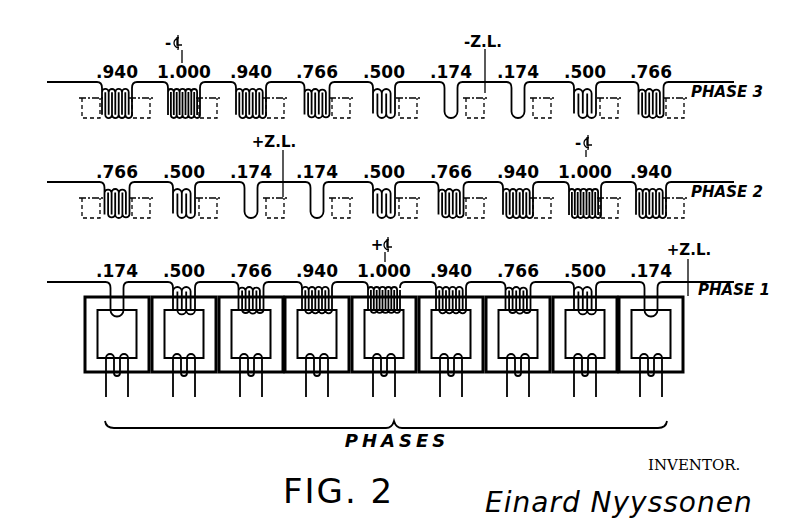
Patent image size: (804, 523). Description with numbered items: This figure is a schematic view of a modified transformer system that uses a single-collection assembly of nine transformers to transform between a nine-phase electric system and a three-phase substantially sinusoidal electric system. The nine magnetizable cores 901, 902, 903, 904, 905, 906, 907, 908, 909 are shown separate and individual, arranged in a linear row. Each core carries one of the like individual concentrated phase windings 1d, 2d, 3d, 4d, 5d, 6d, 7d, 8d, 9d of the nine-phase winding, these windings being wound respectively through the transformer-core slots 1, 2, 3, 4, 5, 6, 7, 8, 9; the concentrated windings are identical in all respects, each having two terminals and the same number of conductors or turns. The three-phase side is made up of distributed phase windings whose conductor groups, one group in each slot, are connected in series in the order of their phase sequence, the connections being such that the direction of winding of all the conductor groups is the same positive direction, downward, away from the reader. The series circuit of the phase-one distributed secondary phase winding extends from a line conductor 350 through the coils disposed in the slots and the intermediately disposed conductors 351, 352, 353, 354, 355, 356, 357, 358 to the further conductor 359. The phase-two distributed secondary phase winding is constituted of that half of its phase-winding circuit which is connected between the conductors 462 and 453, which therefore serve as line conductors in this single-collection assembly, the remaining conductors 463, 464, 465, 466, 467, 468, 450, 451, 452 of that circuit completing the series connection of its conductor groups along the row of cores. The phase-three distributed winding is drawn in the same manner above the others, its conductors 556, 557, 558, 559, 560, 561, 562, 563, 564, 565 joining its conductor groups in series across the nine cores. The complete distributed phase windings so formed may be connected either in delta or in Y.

The phase 3 winding step segment 565 is at (88, 80).
The phase 3 winding step segment 564 is at (147, 80).
The phase 3 winding step segment 563 is at (213, 80).
The phase 3 winding step segment 562 is at (280, 80).
The phase 3 winding step segment 561 is at (345, 80).
The phase 3 winding step segment 560 is at (417, 80).
The phase 3 winding step segment 559 is at (493, 80).
The phase 3 winding step segment 558 is at (562, 80).
The phase 3 winding step segment 557 is at (621, 80).
The phase 3 winding step segment 556 is at (696, 80).
The line conductor 453 is at (73, 180).
The phase 2 winding step segment 452 is at (147, 180).
The phase 2 winding step segment 451 is at (213, 180).
The phase 2 winding step segment 450 is at (273, 180).
The phase 2 winding step segment 468 is at (290, 180).
The phase 2 winding step segment 467 is at (350, 180).
The phase 2 winding step segment 466 is at (417, 180).
The phase 2 winding step segment 465 is at (480, 180).
The phase 2 winding step segment 464 is at (549, 180).
The phase 2 winding step segment 463 is at (624, 180).
The line conductor 462 is at (694, 180).
The further conductor 359 is at (60, 280).
The intermediately disposed conductor 358 is at (148, 280).
The intermediately disposed conductor 357 is at (217, 280).
The intermediately disposed conductor 356 is at (283, 280).
The intermediately disposed conductor 355 is at (352, 280).
The intermediately disposed conductor 354 is at (417, 280).
The intermediately disposed conductor 353 is at (488, 280).
The intermediately disposed conductor 352 is at (552, 280).
The intermediately disposed conductor 351 is at (621, 280).
The line conductor 350 is at (709, 280).
The magnetizable core 909 is at (138, 363).
The magnetizable core 908 is at (205, 363).
The magnetizable core 907 is at (272, 363).
The magnetizable core 906 is at (338, 363).
The magnetizable core 905 is at (405, 363).
The magnetizable core 904 is at (472, 363).
The magnetizable core 903 is at (539, 363).
The magnetizable core 902 is at (606, 363).
The magnetizable core 901 is at (672, 363).
The transformer-core slot 9 is at (117, 334).
The transformer-core slot 8 is at (184, 334).
The transformer-core slot 7 is at (251, 334).
The transformer-core slot 6 is at (317, 334).
The transformer-core slot 5 is at (384, 334).
The transformer-core slot 4 is at (451, 334).
The transformer-core slot 3 is at (518, 334).
The transformer-core slot 2 is at (585, 334).
The transformer-core slot 1 is at (651, 334).
The phase winding 9d is at (119, 387).
The phase winding 8d is at (186, 387).
The phase winding 7d is at (253, 387).
The phase winding 6d is at (319, 387).
The phase winding 5d is at (386, 387).
The phase winding 4d is at (453, 387).
The phase winding 3d is at (520, 387).
The phase winding 2d is at (587, 387).
The phase winding 1d is at (653, 387).